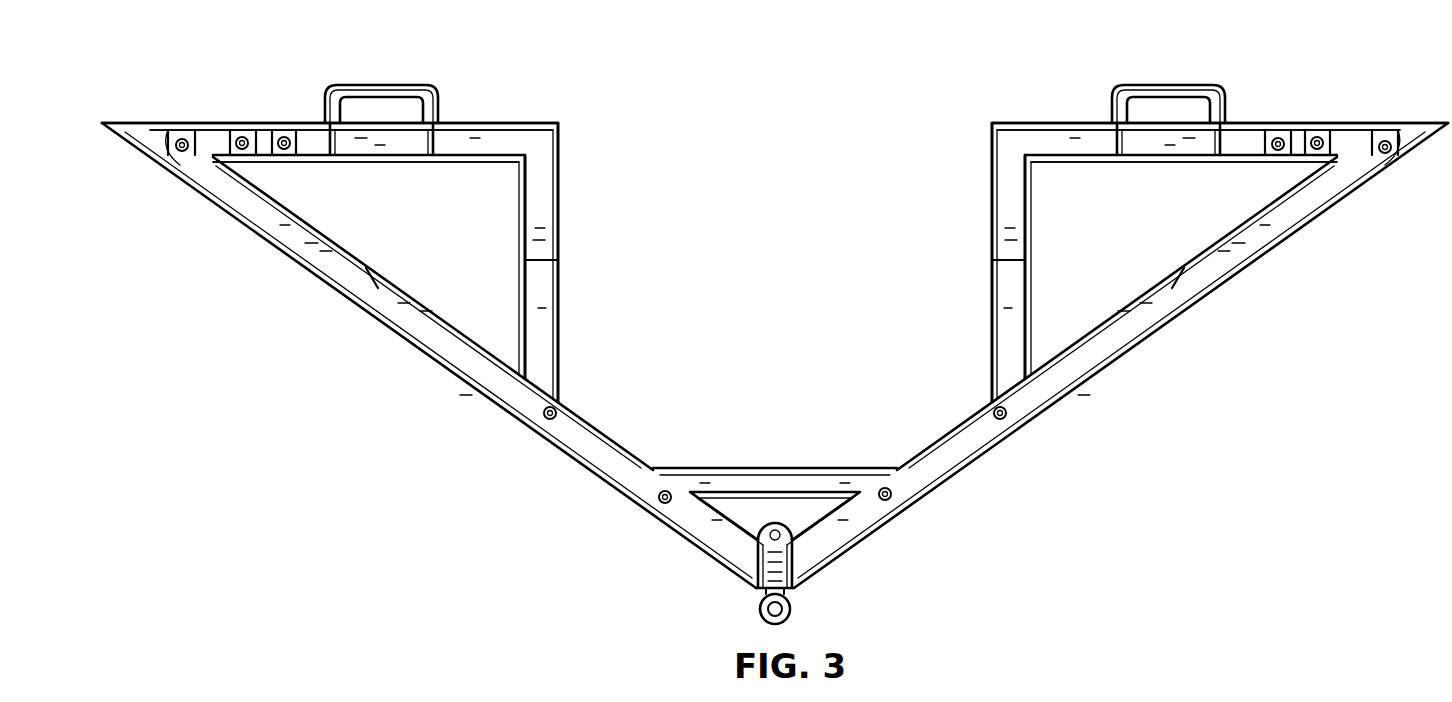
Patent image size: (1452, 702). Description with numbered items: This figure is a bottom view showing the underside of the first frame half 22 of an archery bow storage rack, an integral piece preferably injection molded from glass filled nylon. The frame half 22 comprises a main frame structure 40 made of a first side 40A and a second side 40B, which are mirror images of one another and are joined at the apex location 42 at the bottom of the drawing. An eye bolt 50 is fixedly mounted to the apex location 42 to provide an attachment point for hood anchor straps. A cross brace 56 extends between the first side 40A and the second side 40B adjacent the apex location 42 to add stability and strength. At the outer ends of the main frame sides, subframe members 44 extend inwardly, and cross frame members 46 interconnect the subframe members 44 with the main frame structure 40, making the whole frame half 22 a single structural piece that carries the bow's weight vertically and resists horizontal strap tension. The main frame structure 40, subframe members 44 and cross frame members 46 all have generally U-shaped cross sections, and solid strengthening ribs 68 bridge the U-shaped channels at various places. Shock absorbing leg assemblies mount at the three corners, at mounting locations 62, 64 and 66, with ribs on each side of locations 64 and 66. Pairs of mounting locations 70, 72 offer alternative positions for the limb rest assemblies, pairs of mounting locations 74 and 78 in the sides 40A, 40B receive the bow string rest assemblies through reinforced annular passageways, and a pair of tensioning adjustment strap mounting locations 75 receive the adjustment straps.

The first frame half 22 is at (566, 496).
The main frame structure 40 is at (712, 576).
The first side 40A is at (513, 387).
The second side 40B is at (998, 428).
The apex location 42 is at (742, 602).
The subframe members 44 is at (470, 142).
The cross frame members 46 is at (540, 296).
The eye bolt 50 is at (792, 614).
The cross brace 56 is at (753, 486).
The mounting location 62 is at (774, 528).
The mounting location 64 is at (1380, 152).
The mounting location 66 is at (152, 142).
The strengthening ribs 68 is at (338, 138).
The mounting locations 70 is at (297, 128).
The mounting locations 72 is at (226, 128).
The mounting locations 74 is at (672, 512).
The tensioning adjustment strap mounting locations 75 is at (340, 83).
The mounting locations 78 is at (547, 425).